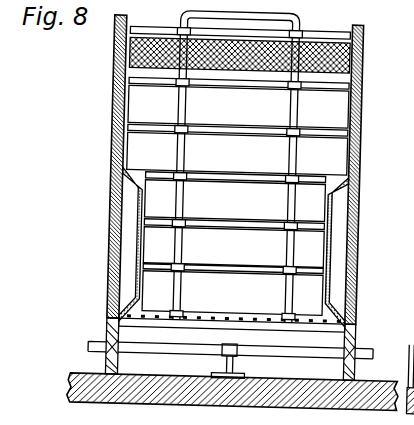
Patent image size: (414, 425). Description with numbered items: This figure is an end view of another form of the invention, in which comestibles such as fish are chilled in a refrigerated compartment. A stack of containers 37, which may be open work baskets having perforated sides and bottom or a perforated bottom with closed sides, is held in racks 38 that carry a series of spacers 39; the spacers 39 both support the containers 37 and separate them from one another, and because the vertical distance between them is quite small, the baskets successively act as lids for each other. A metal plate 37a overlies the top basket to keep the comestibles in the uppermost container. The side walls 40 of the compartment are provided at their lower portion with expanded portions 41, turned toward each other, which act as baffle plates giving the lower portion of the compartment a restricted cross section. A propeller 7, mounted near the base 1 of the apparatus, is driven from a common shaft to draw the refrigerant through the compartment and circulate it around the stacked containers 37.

The base 1 is at (388, 383).
The propeller 7 is at (110, 331).
The container 37 is at (121, 58).
The metal plate 37a is at (328, 33).
The rack 38 is at (184, 106).
The spacer 39 is at (186, 134).
The side wall 40 is at (113, 216).
The expanded portion 41 is at (138, 264).